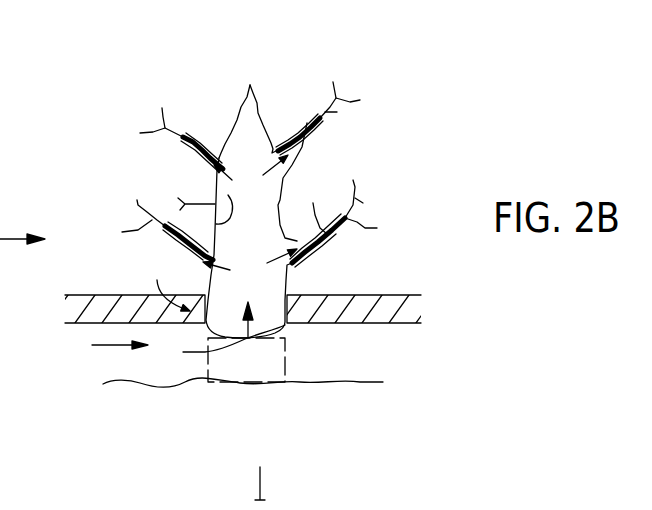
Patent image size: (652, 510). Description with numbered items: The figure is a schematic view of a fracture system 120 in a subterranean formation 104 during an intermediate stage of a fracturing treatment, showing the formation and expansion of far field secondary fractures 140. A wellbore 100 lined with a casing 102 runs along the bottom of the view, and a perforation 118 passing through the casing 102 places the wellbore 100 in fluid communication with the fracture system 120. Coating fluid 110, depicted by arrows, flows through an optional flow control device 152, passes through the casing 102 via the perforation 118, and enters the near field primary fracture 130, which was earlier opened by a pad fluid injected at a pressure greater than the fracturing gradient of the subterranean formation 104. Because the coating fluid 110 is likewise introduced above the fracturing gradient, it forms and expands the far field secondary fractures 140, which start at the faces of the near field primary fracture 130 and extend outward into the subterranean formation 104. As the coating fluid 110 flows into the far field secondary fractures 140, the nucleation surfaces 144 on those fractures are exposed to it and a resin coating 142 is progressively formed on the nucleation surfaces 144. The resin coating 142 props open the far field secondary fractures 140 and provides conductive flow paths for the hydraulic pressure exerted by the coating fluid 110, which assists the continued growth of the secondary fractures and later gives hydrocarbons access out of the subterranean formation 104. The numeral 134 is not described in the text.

The wellbore 100 is at (348, 358).
The casing 102 is at (83, 307).
The subterranean formation 104 is at (119, 98).
The coating fluid 110 is at (225, 353).
The perforation 118 is at (165, 278).
The fracture system 120 is at (368, 78).
The near field primary fracture 130 is at (266, 250).
The particle 134 is at (228, 195).
The far field secondary fracture 140 is at (195, 140).
The resin coating 142 is at (183, 143).
The nucleation surface 144 is at (310, 137).
The flow control device 152 is at (272, 383).